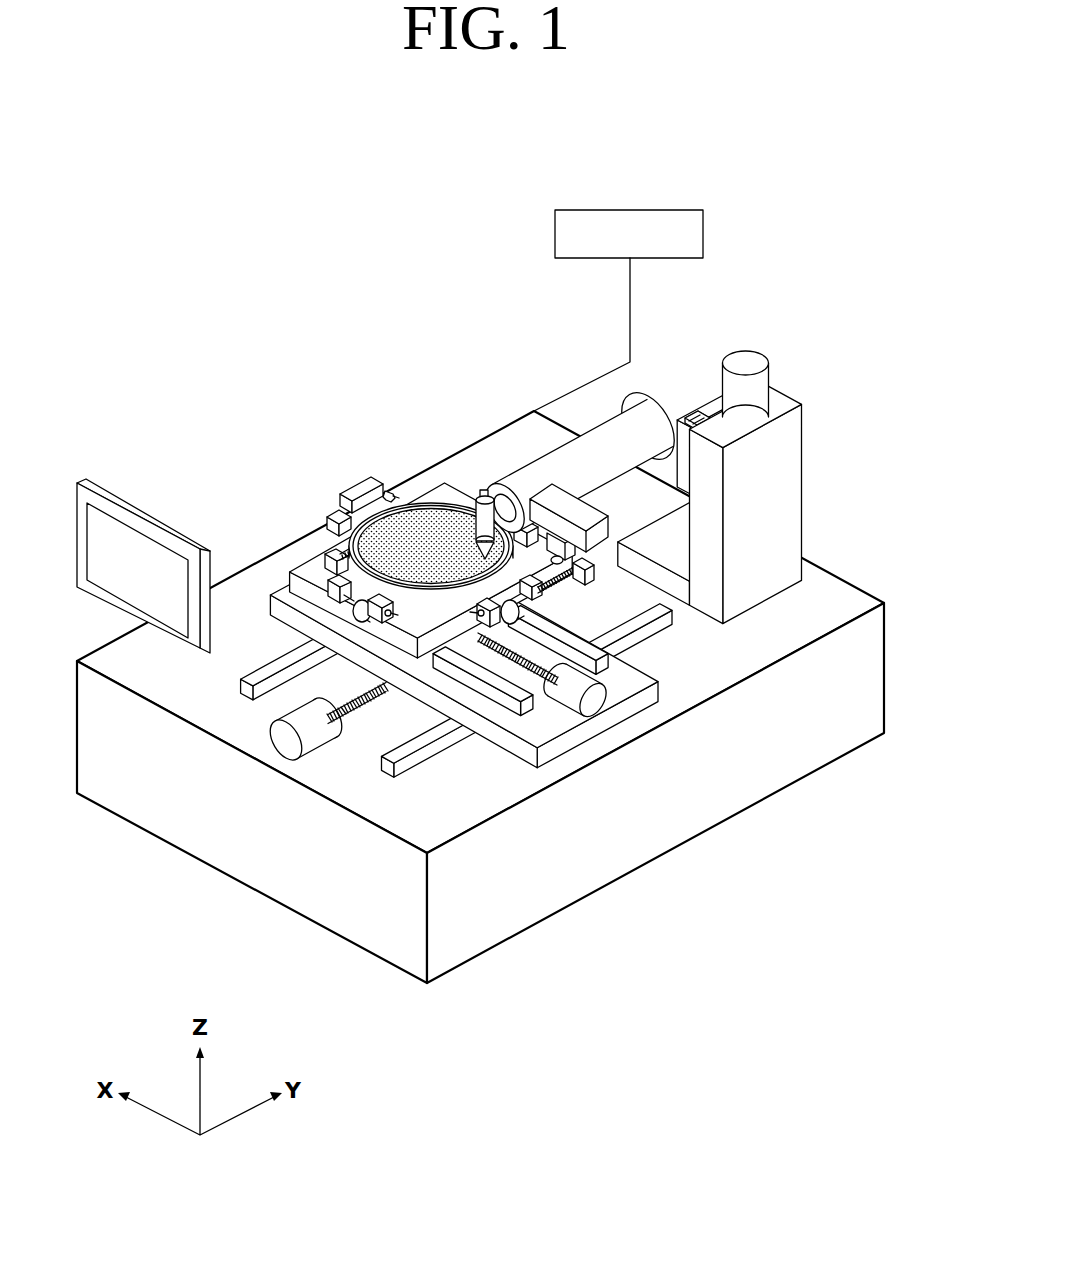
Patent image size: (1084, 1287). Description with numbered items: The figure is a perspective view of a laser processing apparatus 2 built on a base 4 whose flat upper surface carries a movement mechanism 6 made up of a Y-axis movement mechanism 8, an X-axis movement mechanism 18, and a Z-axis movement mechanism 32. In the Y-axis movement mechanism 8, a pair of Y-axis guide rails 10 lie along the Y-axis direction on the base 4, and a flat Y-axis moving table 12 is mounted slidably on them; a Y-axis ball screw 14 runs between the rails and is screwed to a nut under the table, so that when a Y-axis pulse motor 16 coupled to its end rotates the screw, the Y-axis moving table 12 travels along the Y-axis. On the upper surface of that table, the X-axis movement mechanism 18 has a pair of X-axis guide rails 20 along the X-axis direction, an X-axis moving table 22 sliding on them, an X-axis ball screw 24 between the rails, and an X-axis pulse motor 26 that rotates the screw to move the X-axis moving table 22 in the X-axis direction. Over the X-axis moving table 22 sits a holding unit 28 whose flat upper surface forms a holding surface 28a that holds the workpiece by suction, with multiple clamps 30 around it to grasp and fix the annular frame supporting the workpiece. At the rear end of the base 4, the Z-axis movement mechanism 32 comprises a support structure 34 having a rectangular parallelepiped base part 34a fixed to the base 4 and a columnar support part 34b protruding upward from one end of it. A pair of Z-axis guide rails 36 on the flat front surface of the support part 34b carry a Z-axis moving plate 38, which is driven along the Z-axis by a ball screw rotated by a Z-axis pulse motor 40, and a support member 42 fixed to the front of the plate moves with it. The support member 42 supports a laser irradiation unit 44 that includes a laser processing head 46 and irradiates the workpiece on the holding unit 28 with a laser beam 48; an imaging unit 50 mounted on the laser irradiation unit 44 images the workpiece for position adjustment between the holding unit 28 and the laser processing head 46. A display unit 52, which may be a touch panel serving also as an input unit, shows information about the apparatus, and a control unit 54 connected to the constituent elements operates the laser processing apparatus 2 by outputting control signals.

The laser processing apparatus 2 is at (501, 599).
The base 4 is at (467, 930).
The movement mechanism 6 is at (511, 738).
The Y-axis movement mechanism 8 is at (394, 755).
The Y-axis guide rails 10 is at (240, 688).
The Y-axis moving table 12 is at (290, 620).
The Y-axis ball screw 14 is at (332, 712).
The Y-axis pulse motor 16 is at (284, 747).
The X-axis movement mechanism 18 is at (541, 679).
The X-axis guide rails 20 is at (528, 708).
The X-axis moving table 22 is at (416, 619).
The X-axis ball screw 24 is at (540, 676).
The X-axis pulse motor 26 is at (594, 700).
The holding unit 28 is at (349, 512).
The holding surface 28a is at (365, 511).
The clamps 30 is at (352, 497).
The Z-axis movement mechanism 32 is at (775, 621).
The support structure 34 is at (640, 465).
The base part 34a is at (677, 543).
The support part 34b is at (770, 502).
The Z-axis guide rails 36 is at (703, 415).
The Z-axis moving plate 38 is at (688, 418).
The Z-axis pulse motor 40 is at (750, 370).
The support member 42 is at (667, 444).
The laser irradiation unit 44 is at (496, 473).
The laser processing head 46 is at (477, 505).
The laser beam 48 is at (488, 550).
The imaging unit 50 is at (574, 513).
The display unit 52 is at (115, 533).
The control unit 54 is at (622, 209).